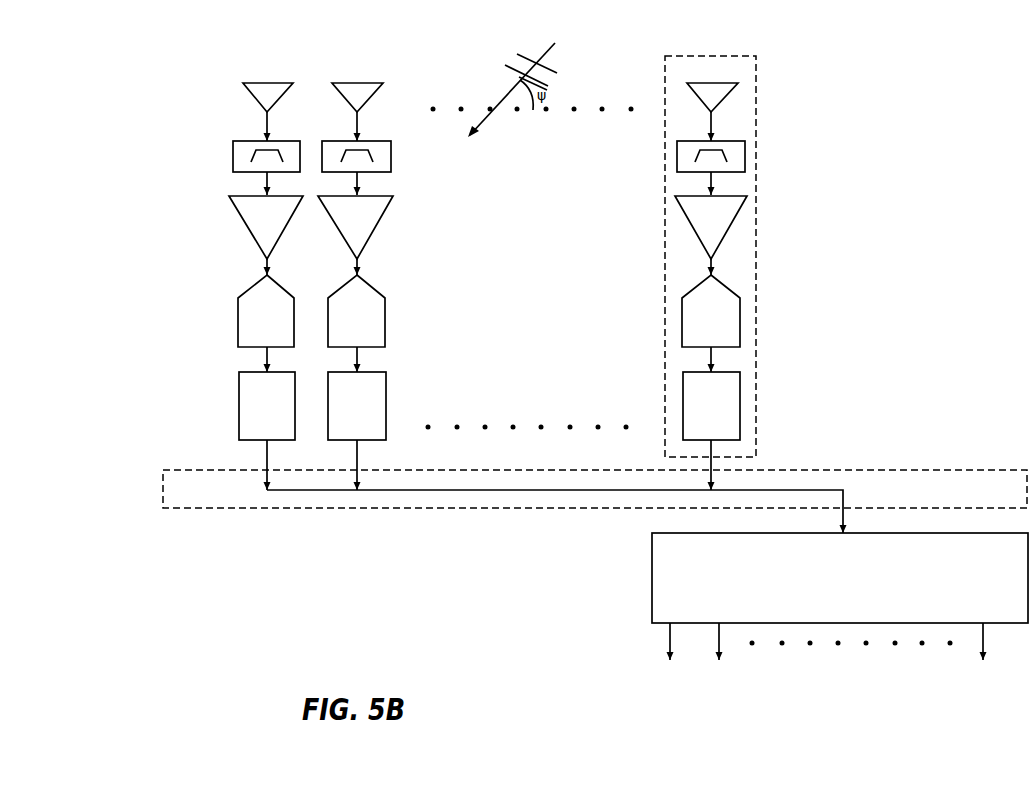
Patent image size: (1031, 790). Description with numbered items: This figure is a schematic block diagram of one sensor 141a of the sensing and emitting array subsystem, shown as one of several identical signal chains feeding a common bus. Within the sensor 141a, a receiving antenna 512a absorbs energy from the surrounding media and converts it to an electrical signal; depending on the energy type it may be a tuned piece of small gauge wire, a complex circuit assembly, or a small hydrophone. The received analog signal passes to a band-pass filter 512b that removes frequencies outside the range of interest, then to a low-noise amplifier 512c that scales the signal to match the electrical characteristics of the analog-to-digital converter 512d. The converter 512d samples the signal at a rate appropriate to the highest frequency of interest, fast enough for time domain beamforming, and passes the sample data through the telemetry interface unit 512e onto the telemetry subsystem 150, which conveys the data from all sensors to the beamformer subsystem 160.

The sensor 141a is at (742, 53).
The receiving antenna 512a is at (728, 98).
The band-pass filter 512b is at (745, 157).
The amplifier 512c is at (732, 222).
The analog-to-digital converter 512d is at (738, 300).
The telemetry interface unit 512e is at (740, 383).
The telemetry subsystem 150 is at (517, 508).
The beamformer subsystem 160 is at (652, 559).